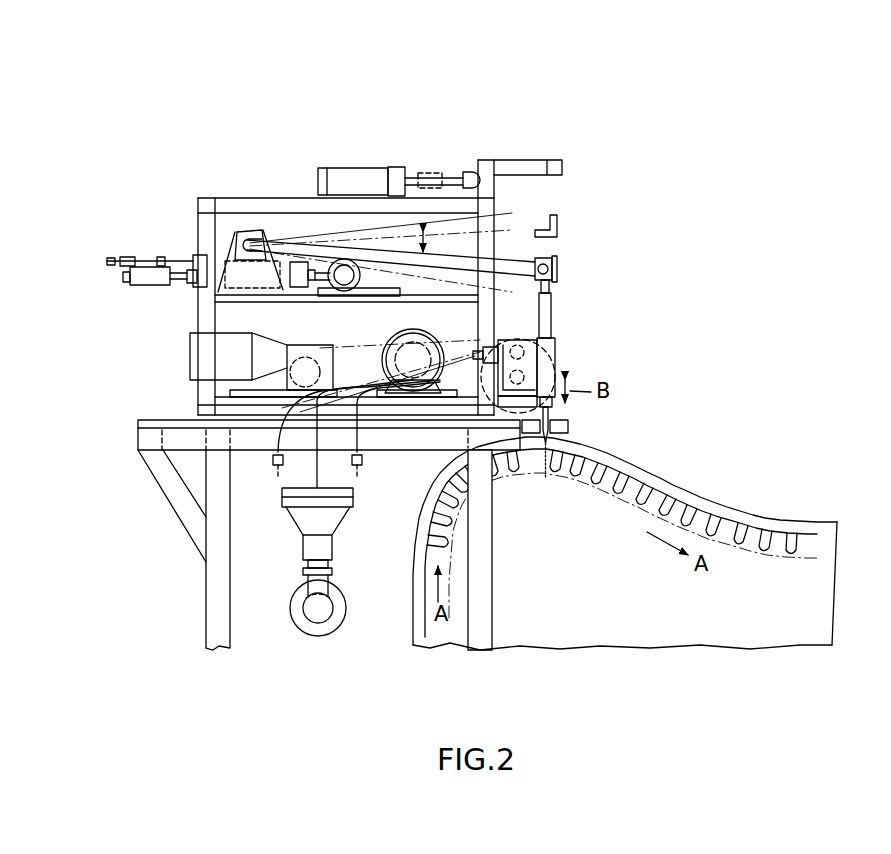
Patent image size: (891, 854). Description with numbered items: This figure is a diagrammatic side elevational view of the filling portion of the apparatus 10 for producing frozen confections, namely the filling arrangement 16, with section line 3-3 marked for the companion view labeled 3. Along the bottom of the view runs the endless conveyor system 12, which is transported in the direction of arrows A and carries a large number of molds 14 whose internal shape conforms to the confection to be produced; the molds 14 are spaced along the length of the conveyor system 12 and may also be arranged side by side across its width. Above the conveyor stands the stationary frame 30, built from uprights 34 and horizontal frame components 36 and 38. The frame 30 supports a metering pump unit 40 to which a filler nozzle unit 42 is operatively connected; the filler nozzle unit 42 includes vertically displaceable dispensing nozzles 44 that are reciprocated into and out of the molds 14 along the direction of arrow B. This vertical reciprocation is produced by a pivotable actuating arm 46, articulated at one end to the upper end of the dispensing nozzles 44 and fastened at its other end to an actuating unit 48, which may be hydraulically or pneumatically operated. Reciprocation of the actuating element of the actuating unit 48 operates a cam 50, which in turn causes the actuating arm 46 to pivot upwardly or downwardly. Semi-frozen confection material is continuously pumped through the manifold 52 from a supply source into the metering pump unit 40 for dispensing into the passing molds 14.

The apparatus 10 is at (805, 505).
The endless conveyor system 12 is at (707, 510).
The molds 14 is at (592, 477).
The filling arrangement 16 is at (384, 139).
The stationary frame 30 is at (163, 527).
The uprights 34 is at (198, 318).
The horizontal frame components 36 is at (404, 450).
The horizontal frame components 38 is at (228, 198).
The metering pump unit 40 is at (500, 340).
The filler nozzle unit 42 is at (555, 342).
The dispensing nozzles 44 is at (568, 430).
The pivotable actuating arm 46 is at (512, 257).
The actuating unit 48 is at (225, 268).
The cam 50 is at (338, 258).
The manifold 52 is at (333, 583).
The section line 3- 3 is at (67, 160).